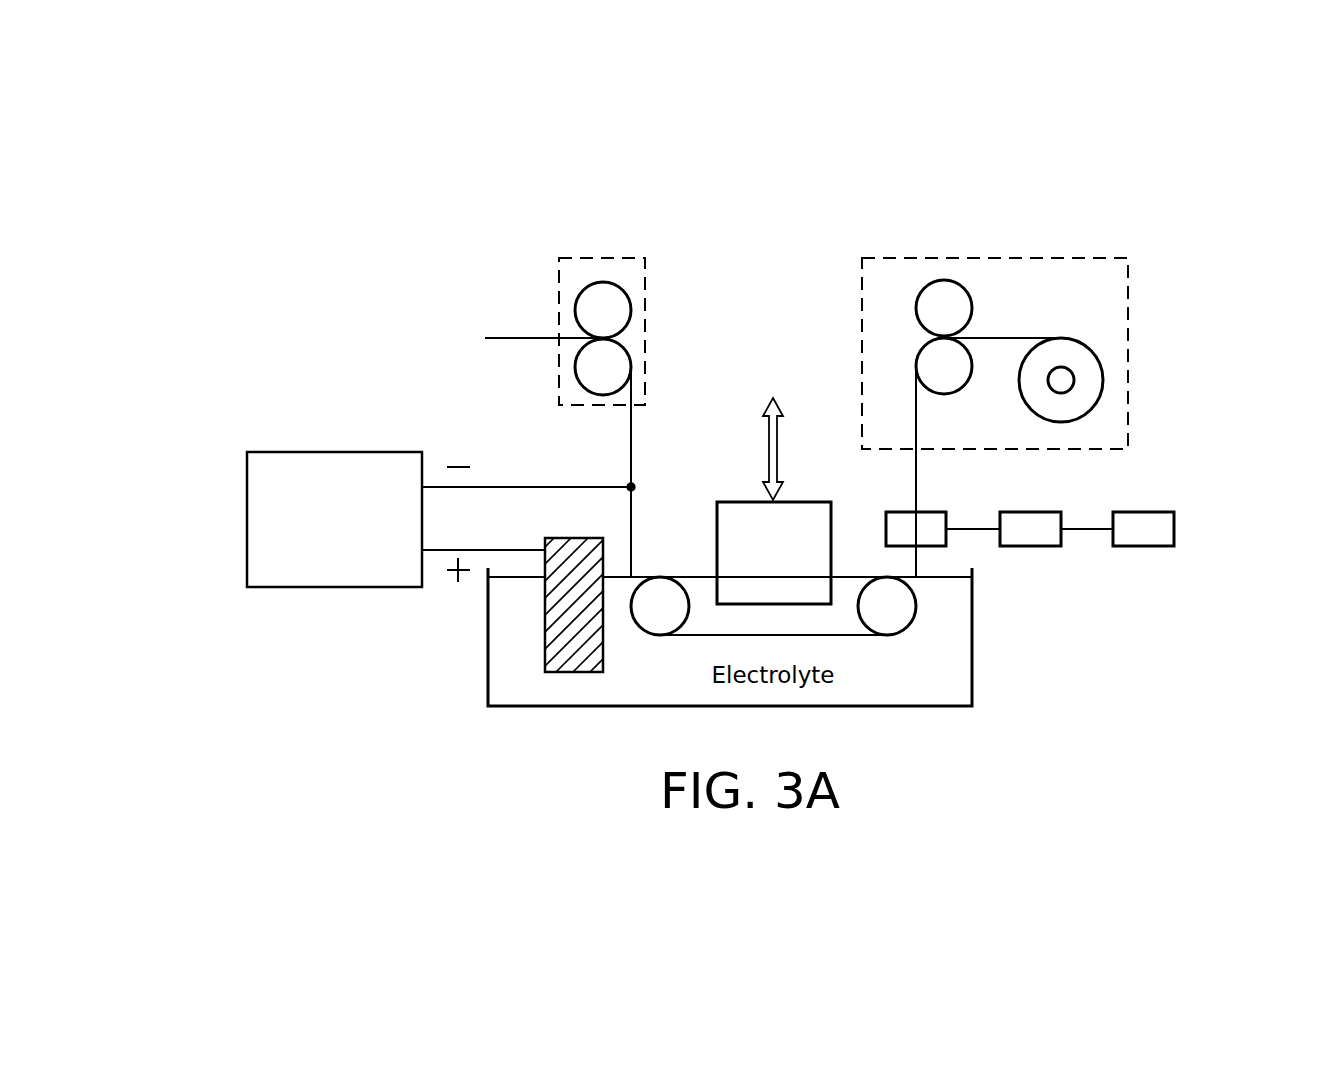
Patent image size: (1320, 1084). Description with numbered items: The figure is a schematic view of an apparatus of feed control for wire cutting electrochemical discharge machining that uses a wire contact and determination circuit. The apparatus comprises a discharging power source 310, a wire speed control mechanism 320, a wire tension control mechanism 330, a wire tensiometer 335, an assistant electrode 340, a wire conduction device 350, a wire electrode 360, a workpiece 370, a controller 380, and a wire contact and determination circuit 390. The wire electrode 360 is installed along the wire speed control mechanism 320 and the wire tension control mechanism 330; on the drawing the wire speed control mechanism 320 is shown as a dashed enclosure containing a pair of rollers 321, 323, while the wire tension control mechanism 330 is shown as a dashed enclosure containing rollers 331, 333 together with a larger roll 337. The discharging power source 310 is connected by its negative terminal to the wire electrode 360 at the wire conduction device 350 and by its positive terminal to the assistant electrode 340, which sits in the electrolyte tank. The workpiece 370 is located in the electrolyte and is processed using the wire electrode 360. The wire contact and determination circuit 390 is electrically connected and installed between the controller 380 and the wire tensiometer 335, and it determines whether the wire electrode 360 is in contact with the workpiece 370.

The discharging power source 310 is at (247, 517).
The wire speed control mechanism 320 is at (550, 290).
The unwinding roller 321 is at (575, 305).
The unwinding roller 323 is at (575, 362).
The wire tension control mechanism 330 is at (1005, 312).
The winding roller 331 is at (917, 305).
The winding roller 333 is at (917, 362).
The wire tensiometer 335 is at (930, 512).
The winding roll 337 is at (1104, 378).
The assistant electrode 340 is at (545, 650).
The wire conduction device 350 is at (630, 487).
The wire electrode 360 is at (633, 413).
The workpiece 370 is at (822, 500).
The controller 380 is at (1176, 527).
The wire contact and determination circuit 390 is at (1032, 547).